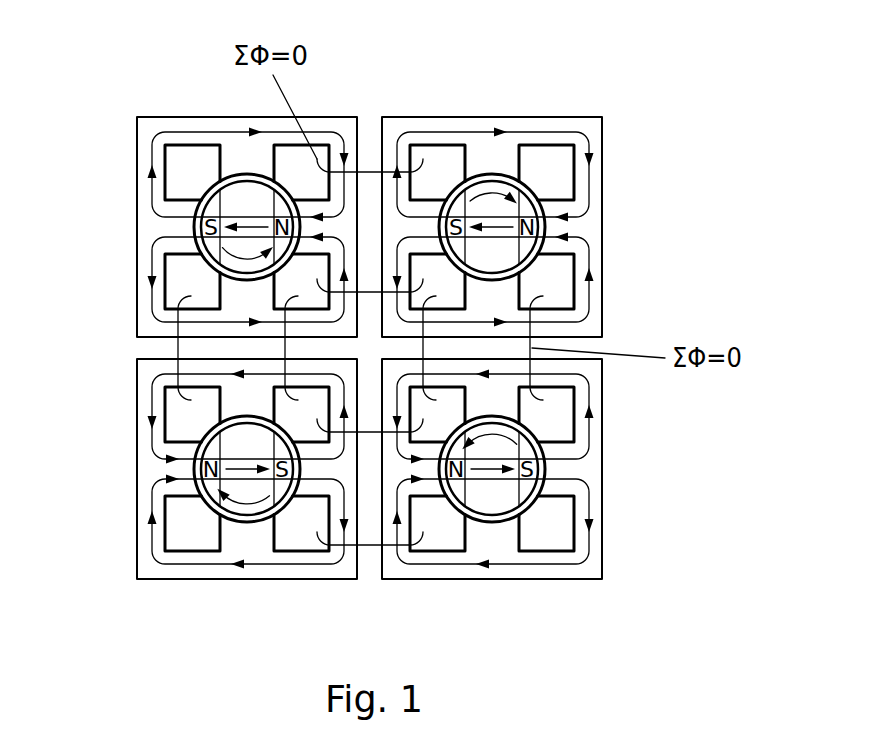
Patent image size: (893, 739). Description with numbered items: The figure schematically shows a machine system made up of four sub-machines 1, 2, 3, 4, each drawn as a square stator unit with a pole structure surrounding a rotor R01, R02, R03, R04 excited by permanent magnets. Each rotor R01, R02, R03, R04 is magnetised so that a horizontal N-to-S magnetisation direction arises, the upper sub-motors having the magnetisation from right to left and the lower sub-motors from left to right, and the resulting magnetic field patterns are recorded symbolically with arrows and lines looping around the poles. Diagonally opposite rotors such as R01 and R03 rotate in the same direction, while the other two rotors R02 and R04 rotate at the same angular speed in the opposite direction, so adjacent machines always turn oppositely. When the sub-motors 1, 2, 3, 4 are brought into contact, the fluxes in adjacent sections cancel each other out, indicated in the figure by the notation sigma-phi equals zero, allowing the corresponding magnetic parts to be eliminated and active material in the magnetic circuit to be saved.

The sub-machine 1 is at (571, 579).
The sub-machine 2 is at (573, 117).
The sub-machine 3 is at (137, 128).
The sub-machine 4 is at (293, 579).
The rotor R01 is at (493, 514).
The rotor R02 is at (490, 176).
The rotor R03 is at (198, 226).
The rotor R04 is at (246, 514).